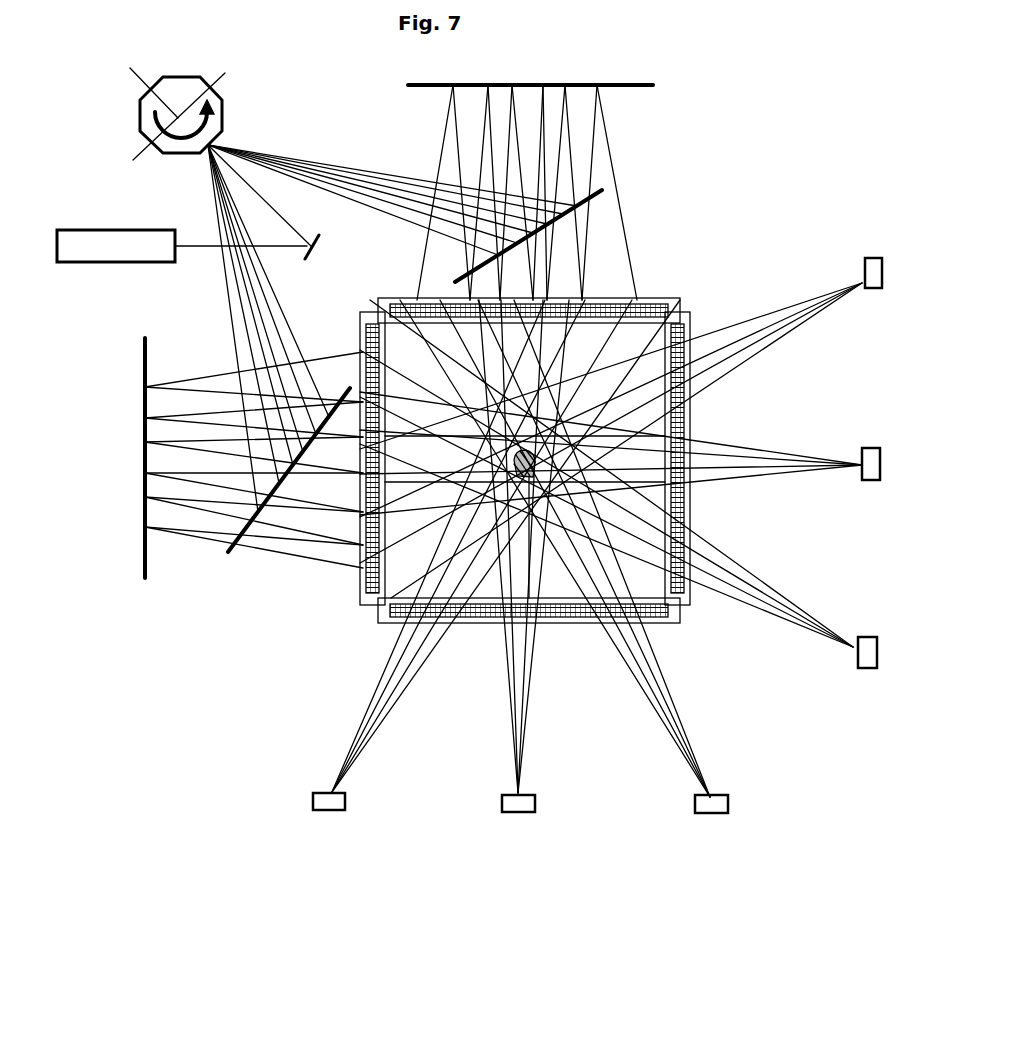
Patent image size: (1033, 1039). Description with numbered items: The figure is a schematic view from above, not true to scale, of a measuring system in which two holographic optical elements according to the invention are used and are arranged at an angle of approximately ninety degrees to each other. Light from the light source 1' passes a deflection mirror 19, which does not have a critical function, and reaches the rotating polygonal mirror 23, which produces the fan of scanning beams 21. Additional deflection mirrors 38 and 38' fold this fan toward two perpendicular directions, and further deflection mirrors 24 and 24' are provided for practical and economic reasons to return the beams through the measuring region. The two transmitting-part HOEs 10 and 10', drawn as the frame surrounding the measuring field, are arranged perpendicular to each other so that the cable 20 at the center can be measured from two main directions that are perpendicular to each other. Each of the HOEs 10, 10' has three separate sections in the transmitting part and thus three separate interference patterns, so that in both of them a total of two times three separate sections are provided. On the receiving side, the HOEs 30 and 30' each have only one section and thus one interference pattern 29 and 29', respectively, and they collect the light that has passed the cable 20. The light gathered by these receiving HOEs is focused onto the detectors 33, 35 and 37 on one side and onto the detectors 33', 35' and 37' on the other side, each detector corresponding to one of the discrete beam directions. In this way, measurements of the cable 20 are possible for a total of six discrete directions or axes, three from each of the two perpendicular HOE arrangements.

The polygonal mirror 23 is at (147, 128).
The scanning light beam 21 is at (267, 152).
The light source 1' is at (181, 216).
The deflection mirror 19 is at (317, 260).
The deflection mirror 38' is at (477, 236).
The deflection mirror 38 is at (282, 511).
The deflection mirror 24' is at (579, 185).
The deflection mirror 24 is at (98, 458).
The HOE 10 is at (560, 481).
The HOE 10' is at (564, 276).
The interference pattern 29 is at (713, 437).
The frame side member 29' is at (576, 668).
The HOE 30 is at (733, 508).
The HOE 30' is at (529, 662).
The cable 20 is at (545, 472).
The detector 33 is at (621, 393).
The detector 35 is at (620, 444).
The detector 37 is at (618, 484).
The detector 33' is at (564, 583).
The detector 35' is at (491, 583).
The detector 37' is at (451, 583).